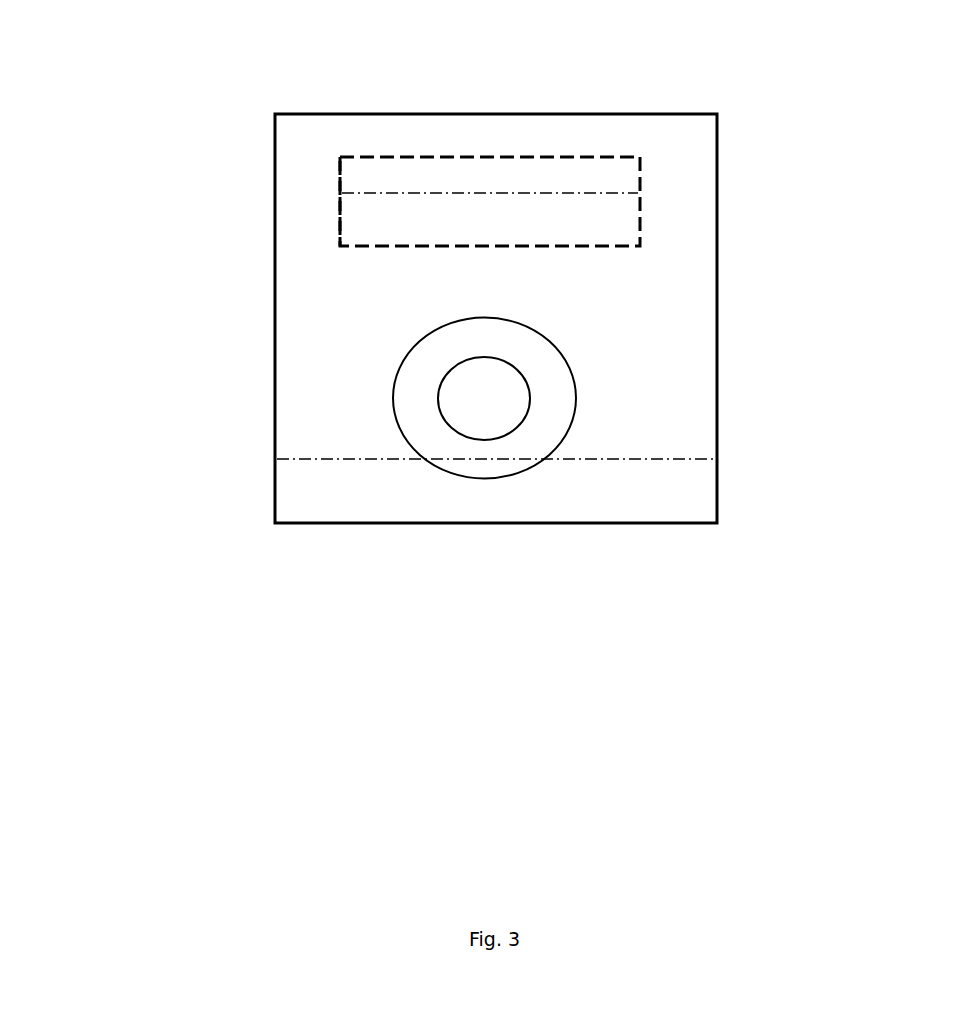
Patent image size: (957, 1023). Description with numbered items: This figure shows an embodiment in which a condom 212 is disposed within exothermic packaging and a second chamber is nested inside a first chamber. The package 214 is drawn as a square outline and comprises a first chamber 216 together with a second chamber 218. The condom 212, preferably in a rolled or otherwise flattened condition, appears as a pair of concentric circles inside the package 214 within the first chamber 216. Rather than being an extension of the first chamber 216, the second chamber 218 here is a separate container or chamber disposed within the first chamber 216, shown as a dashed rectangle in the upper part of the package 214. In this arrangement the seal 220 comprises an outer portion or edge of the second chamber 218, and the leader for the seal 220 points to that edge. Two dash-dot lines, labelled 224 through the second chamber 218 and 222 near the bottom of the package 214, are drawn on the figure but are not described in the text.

The condom 212 is at (420, 372).
The package 214 is at (720, 174).
The first chamber 216 is at (640, 337).
The second chamber 218 is at (395, 178).
The seal 220 is at (343, 210).
The lower axis line 222 is at (317, 496).
The upper axis line 224 is at (613, 211).